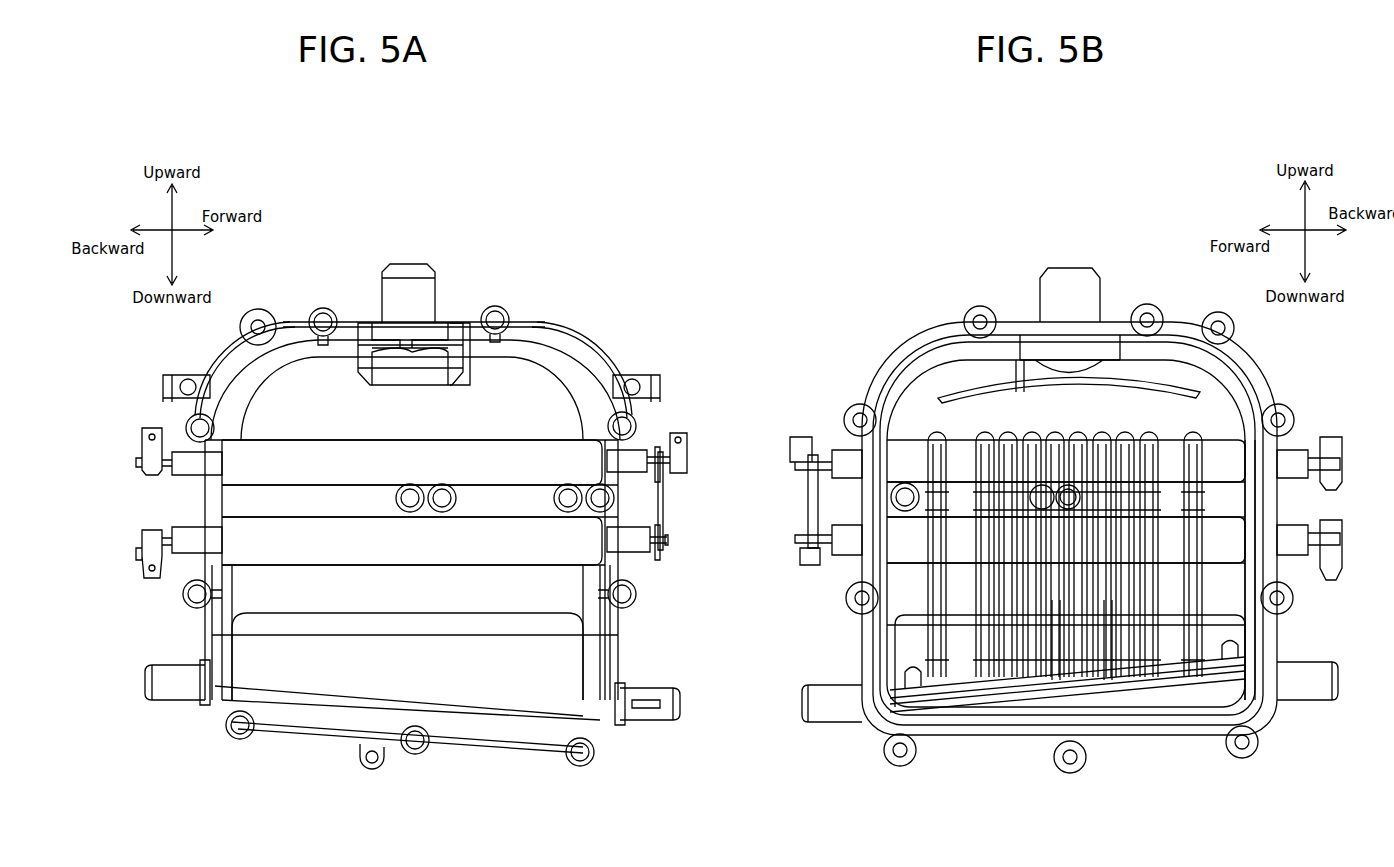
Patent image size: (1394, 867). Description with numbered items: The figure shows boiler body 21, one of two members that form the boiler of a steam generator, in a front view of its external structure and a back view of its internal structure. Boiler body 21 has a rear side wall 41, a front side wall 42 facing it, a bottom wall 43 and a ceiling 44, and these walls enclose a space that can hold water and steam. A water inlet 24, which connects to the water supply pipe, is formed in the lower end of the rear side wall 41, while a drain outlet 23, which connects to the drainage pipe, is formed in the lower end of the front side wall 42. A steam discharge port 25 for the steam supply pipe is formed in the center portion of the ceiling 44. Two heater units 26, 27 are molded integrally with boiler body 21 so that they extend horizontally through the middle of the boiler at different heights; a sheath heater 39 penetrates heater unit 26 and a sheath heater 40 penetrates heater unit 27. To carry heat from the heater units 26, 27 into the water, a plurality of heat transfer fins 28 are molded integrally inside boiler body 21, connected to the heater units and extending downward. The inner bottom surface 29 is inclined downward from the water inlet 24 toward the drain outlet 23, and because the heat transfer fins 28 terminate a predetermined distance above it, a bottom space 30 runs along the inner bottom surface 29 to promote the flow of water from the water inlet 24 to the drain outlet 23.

In FIG. 5A, the boiler body 21 is at (590, 283).
In FIG. 5B, the boiler body 21 is at (910, 281).
In FIG. 5A, the drain outlet 23 is at (651, 716).
In FIG. 5B, the drain outlet 23 is at (833, 718).
In FIG. 5A, the water inlet 24 is at (168, 684).
In FIG. 5B, the water inlet 24 is at (1303, 684).
In FIG. 5A, the steam discharge port 25 is at (406, 288).
In FIG. 5B, the steam discharge port 25 is at (1071, 285).
In FIG. 5A, the heater unit 26 is at (240, 462).
In FIG. 5B, the heater unit 26 is at (1230, 450).
In FIG. 5A, the heater unit 27 is at (240, 545).
In FIG. 5B, the heater unit 27 is at (1230, 532).
In FIG. 5B, the heat transfer fins 28 is at (1108, 655).
In FIG. 5B, the inner bottom surface 29 is at (1192, 690).
In FIG. 5B, the bottom space 30 is at (1016, 706).
In FIG. 5A, the sheath heater 39 is at (832, 452).
In FIG. 5A, the sheath heater 40 is at (832, 528).
In FIG. 5A, the rear side wall 41 is at (203, 628).
In FIG. 5B, the rear side wall 41 is at (1264, 631).
In FIG. 5A, the front side wall 42 is at (846, 612).
In FIG. 5B, the bottom wall 43 is at (1136, 715).
In FIG. 5A, the ceiling 44 is at (457, 325).
In FIG. 5B, the ceiling 44 is at (1018, 340).